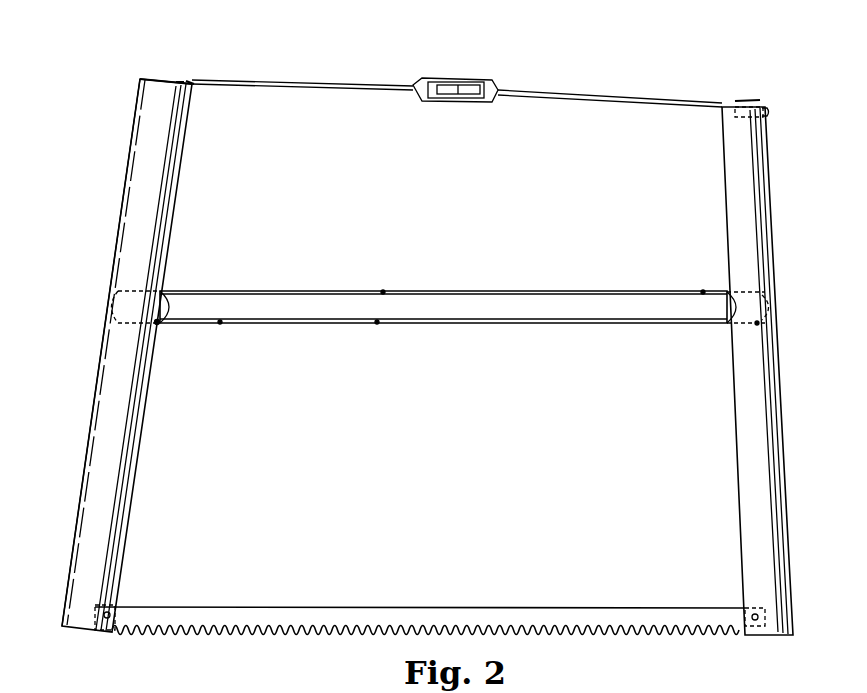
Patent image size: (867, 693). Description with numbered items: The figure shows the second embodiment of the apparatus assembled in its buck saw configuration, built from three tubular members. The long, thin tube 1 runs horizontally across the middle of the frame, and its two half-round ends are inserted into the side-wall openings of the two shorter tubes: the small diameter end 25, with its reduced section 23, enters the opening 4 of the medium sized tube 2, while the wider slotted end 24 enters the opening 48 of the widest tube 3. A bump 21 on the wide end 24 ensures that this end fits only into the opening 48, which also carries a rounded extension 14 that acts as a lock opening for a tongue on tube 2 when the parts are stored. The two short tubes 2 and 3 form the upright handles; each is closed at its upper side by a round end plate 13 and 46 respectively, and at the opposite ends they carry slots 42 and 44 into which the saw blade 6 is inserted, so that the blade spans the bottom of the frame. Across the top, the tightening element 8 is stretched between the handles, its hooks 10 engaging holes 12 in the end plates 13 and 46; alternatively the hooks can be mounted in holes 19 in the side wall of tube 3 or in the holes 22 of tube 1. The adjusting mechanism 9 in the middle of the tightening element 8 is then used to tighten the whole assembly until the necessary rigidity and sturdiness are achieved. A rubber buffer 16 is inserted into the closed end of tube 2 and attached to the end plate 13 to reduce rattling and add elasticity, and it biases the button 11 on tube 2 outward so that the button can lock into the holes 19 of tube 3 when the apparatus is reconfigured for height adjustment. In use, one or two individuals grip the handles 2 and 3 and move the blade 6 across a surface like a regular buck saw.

The tube 1 is at (478, 291).
The tube 2 is at (722, 179).
The tube 3 is at (176, 214).
The opening 4 is at (735, 315).
The saw blade 6 is at (385, 605).
The tightening element 8 is at (540, 98).
The adjusting mechanism 9 is at (497, 90).
The hooks 10 is at (188, 84).
The button 11 is at (769, 112).
The hole 12 is at (178, 82).
The end plate 13 is at (763, 103).
The rounded extension 14 is at (155, 326).
The rubber buffer 16 is at (752, 102).
The holes 19 is at (68, 590).
The bump 21 is at (150, 325).
The holes 22 is at (703, 290).
The small section 23 is at (745, 298).
The slotted end 24 is at (118, 300).
The opposing end 25 is at (765, 310).
The slot 42 is at (745, 610).
The slot 44 is at (116, 610).
The end plate 46 is at (140, 79).
The opening 48 is at (158, 324).